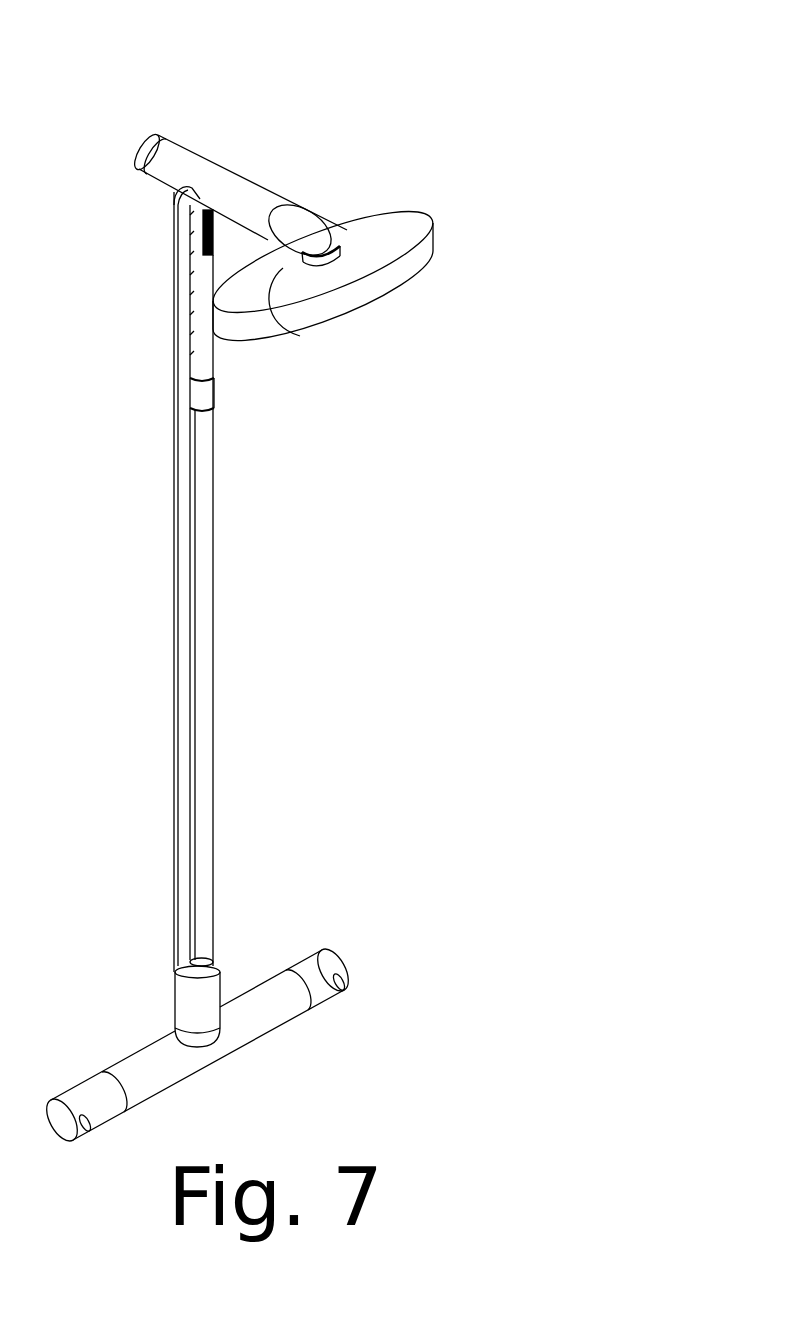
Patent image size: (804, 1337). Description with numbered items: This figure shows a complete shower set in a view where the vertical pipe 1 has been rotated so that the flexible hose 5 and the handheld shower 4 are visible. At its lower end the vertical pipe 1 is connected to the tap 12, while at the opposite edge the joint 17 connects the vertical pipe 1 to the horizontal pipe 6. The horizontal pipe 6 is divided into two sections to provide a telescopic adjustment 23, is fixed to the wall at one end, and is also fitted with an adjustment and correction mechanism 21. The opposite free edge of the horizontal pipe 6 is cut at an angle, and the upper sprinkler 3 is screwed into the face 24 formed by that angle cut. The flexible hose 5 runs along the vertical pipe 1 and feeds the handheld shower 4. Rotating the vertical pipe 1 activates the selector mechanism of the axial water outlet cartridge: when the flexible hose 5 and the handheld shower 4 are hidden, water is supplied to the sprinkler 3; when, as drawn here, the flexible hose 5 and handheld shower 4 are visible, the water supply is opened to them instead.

The vertical pipe 1 is at (165, 648).
The upper sprinkler 3 is at (397, 297).
The handheld shower 4 is at (205, 360).
The flexible hose 5 is at (208, 580).
The horizontal pipe 6 is at (238, 167).
The tap 12 is at (267, 1043).
The joint 17 is at (173, 188).
The adjustment and correction mechanism 21 is at (157, 130).
The telescopic adjustment 23 is at (288, 207).
The face 24 is at (277, 264).